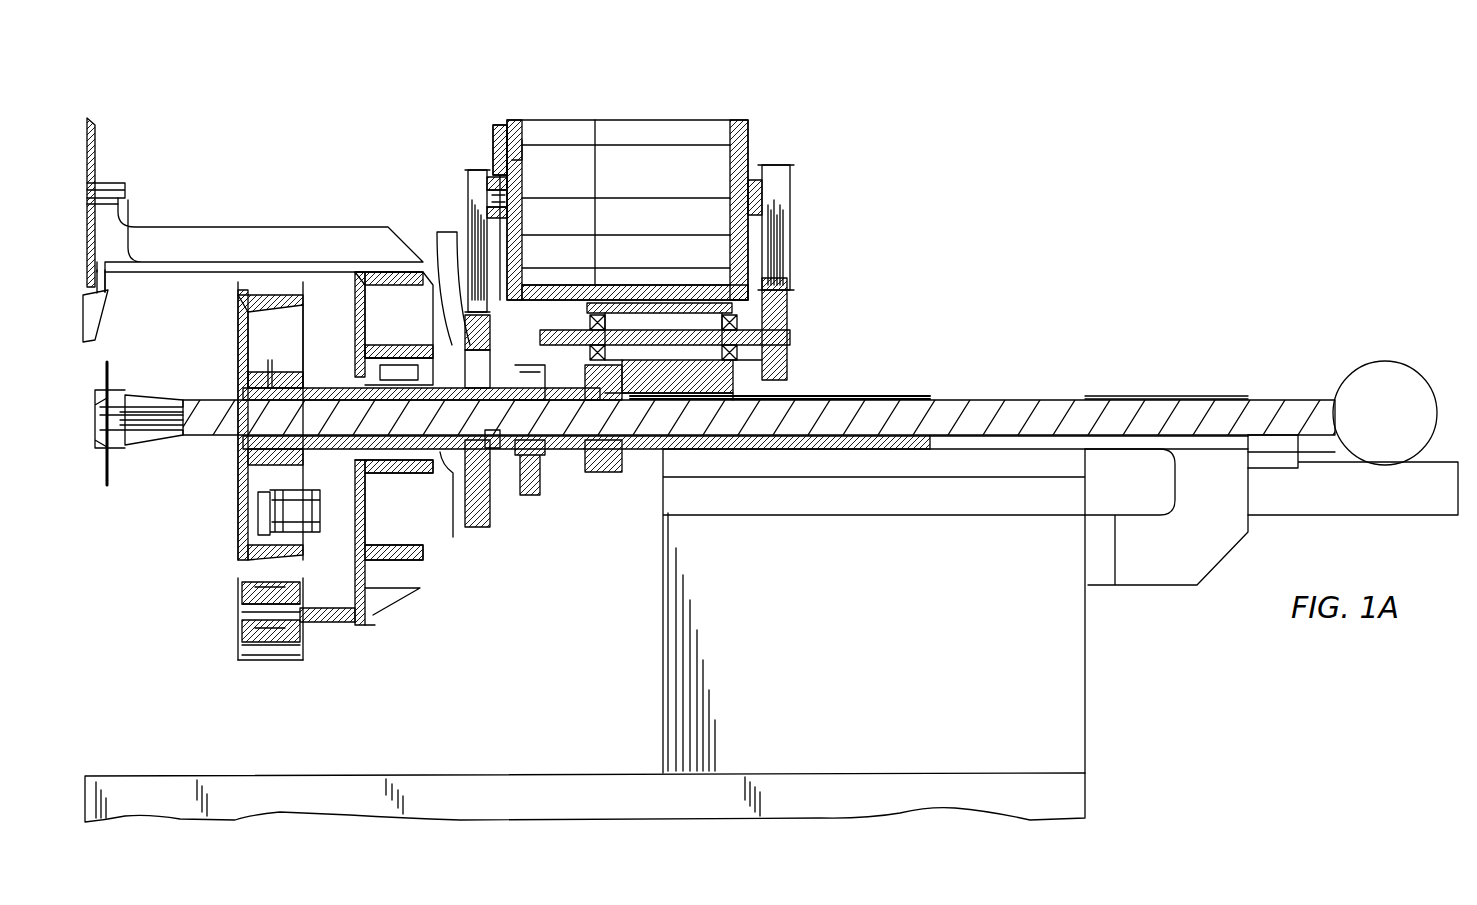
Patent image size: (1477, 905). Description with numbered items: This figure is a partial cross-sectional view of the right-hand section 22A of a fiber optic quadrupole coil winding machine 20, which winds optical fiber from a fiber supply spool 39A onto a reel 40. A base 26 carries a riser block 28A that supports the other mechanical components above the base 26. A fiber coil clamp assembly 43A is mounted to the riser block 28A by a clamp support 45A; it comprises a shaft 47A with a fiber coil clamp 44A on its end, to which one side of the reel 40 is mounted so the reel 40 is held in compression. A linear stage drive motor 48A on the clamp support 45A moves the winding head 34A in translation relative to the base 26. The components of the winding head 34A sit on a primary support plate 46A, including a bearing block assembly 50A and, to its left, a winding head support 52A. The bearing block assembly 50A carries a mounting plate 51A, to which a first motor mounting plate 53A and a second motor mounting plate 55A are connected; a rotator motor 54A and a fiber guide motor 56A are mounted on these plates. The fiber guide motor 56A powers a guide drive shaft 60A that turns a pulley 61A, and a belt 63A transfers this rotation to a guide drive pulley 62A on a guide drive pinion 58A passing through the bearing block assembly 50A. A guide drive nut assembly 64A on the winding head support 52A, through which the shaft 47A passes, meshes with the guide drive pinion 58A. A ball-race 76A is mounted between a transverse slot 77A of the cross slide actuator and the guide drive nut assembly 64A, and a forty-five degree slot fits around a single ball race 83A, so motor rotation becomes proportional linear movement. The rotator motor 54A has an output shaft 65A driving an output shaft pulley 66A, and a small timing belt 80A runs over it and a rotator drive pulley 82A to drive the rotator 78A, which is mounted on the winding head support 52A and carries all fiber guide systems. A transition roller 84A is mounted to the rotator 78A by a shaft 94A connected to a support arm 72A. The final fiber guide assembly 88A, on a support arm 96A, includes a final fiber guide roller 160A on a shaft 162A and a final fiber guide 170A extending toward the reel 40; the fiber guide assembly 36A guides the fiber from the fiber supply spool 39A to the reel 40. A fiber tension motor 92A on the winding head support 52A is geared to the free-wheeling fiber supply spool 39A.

The fiber optic quadrupole coil winding machine 20 is at (984, 150).
The right-hand section 22A is at (1073, 226).
The base 26 is at (1085, 779).
The riser block 28A is at (1085, 648).
The winding head 34A is at (438, 98).
The fiber guide assembly 36A is at (253, 82).
The fiber supply spool 39A is at (245, 570).
The reel 40 is at (117, 378).
The fiber coil clamp assembly 43A is at (192, 646).
The fiber coil clamp 44A is at (133, 478).
The clamp support 45A is at (1228, 550).
The primary support plate 46A is at (922, 395).
The shaft 47A is at (1018, 395).
The linear stage drive motor 48A is at (1390, 515).
The bearing block assembly 50A is at (745, 392).
The mounting plate 51A is at (640, 285).
The winding head support 52A is at (585, 470).
The first motor mounting plate 53A is at (752, 132).
The rotator motor 54A is at (565, 120).
The second motor mounting plate 55A is at (497, 172).
The fiber guide motor 56A is at (655, 120).
The guide drive pinion 58A is at (475, 228).
The guide drive shaft 60A is at (755, 178).
The pulley 61A is at (792, 178).
The guide drive pulley 62A is at (790, 290).
The belt 63A is at (792, 212).
The guide drive nut assembly 64A is at (536, 506).
The output shaft 65A is at (500, 180).
The output shaft pulley 66A is at (470, 175).
The support arm 72A is at (425, 583).
The ball-race 76A is at (497, 397).
The transverse slot 77A is at (671, 280).
The rotator 78A is at (452, 505).
The small timing belt 80A is at (490, 170).
The rotator drive pulley 82A is at (447, 265).
The single ball race 83A is at (495, 432).
The transition roller 84A is at (262, 655).
The final fiber guide assembly 88A is at (222, 180).
The fiber tension motor 92A is at (240, 500).
The shaft 94A is at (330, 622).
The support arm 96A is at (250, 226).
The final fiber guide roller 160A is at (97, 130).
The shaft 162A is at (125, 183).
The final fiber guide 170A is at (103, 318).